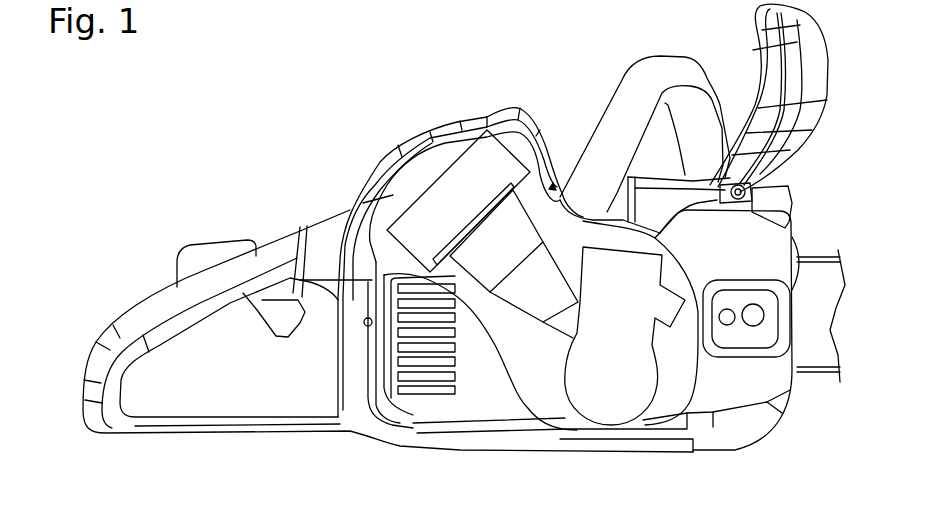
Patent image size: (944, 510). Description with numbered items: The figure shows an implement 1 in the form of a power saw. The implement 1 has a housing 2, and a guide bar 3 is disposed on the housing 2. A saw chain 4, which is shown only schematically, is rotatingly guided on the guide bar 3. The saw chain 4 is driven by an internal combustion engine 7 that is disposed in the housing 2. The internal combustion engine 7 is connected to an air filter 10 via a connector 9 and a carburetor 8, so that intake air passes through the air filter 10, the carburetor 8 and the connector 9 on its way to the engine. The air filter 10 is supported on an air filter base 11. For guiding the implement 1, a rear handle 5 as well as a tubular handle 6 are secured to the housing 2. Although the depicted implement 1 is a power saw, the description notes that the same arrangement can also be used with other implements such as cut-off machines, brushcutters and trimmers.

The implement 1 is at (184, 148).
The housing 2 is at (432, 407).
The guide bar 3 is at (808, 350).
The saw chain 4 is at (815, 258).
The rear handle 5 is at (183, 302).
The tubular handle 6 is at (636, 118).
The internal combustion engine 7 is at (606, 410).
The carburetor 8 is at (543, 168).
The connector 9 is at (530, 292).
The air filter 10 is at (470, 167).
The air filter base 11 is at (508, 233).